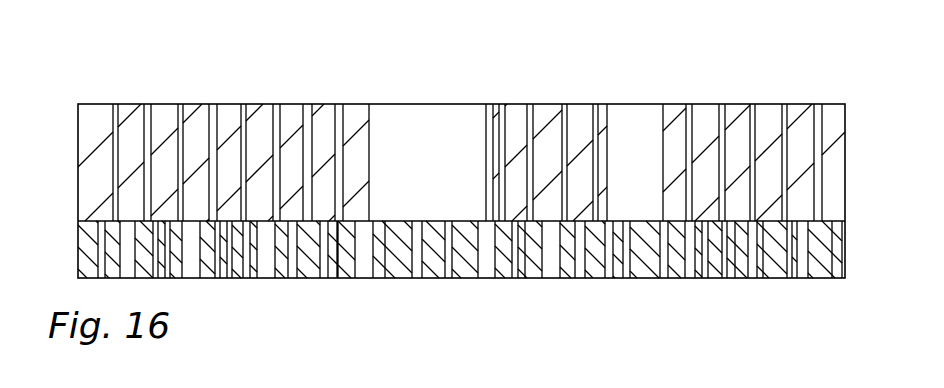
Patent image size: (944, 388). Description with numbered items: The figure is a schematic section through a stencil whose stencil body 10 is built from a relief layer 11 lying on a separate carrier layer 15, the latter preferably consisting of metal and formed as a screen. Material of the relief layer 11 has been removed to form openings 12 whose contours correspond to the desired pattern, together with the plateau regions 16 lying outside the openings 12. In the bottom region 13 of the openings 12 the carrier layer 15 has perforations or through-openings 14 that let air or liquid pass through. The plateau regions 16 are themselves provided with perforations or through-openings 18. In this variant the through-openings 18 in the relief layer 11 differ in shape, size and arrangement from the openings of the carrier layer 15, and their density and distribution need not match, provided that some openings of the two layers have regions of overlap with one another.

The stencil body 10 is at (755, 88).
The relief layer 11 is at (265, 115).
The openings 12 is at (405, 128).
The bottom region 13 is at (408, 218).
The through-openings 14 is at (378, 272).
The carrier layer 15 is at (433, 275).
The plateau regions 16 is at (512, 105).
The through-openings 18 is at (218, 118).